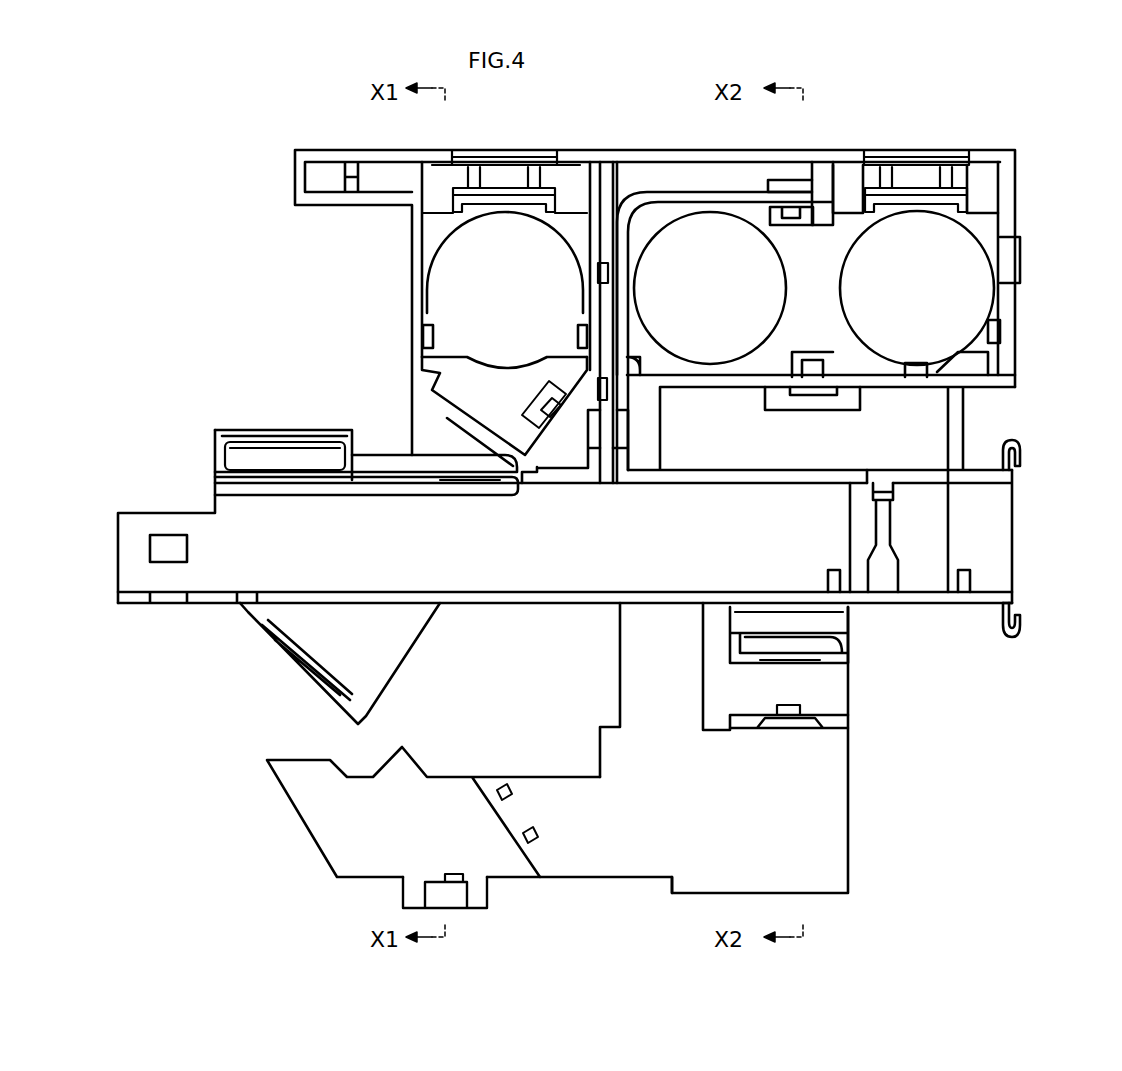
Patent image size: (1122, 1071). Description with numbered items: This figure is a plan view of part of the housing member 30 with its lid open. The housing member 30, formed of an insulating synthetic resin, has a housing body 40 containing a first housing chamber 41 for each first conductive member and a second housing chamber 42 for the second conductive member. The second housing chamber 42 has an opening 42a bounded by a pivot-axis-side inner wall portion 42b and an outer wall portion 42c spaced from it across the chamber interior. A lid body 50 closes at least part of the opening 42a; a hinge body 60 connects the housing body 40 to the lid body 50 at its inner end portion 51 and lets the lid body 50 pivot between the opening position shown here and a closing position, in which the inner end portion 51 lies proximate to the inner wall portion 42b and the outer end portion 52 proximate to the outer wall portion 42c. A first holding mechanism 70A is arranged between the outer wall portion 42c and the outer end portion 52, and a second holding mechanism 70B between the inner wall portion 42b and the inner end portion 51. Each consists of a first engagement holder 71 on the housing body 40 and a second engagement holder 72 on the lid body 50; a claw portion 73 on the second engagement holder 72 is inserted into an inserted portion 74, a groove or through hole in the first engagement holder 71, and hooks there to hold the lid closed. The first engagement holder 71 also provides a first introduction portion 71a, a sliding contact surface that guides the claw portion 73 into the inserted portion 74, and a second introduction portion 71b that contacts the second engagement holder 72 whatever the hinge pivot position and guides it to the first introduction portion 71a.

The housing member 30 is at (650, 95).
The housing body 40 is at (822, 150).
The first housing chamber 41 is at (990, 230).
The second housing chamber 42 is at (967, 507).
The opening 42a is at (989, 635).
The inner wall portion 42b is at (1013, 597).
The outer wall portion 42c is at (1013, 472).
The lid body 50 is at (850, 810).
The inner end portion 51 is at (600, 737).
The outer end portion 52 is at (653, 890).
The hinge body 60 is at (620, 653).
The first holding mechanism 70A is at (160, 733).
The second holding mechanism 70B is at (935, 712).
The first engagement holder 71 is at (445, 483).
The first introduction portion 71a is at (430, 438).
The second introduction portion 71b is at (408, 472).
The second engagement holder 72 is at (413, 897).
The claw portion 73 is at (450, 875).
The inserted portion 74 is at (430, 483).